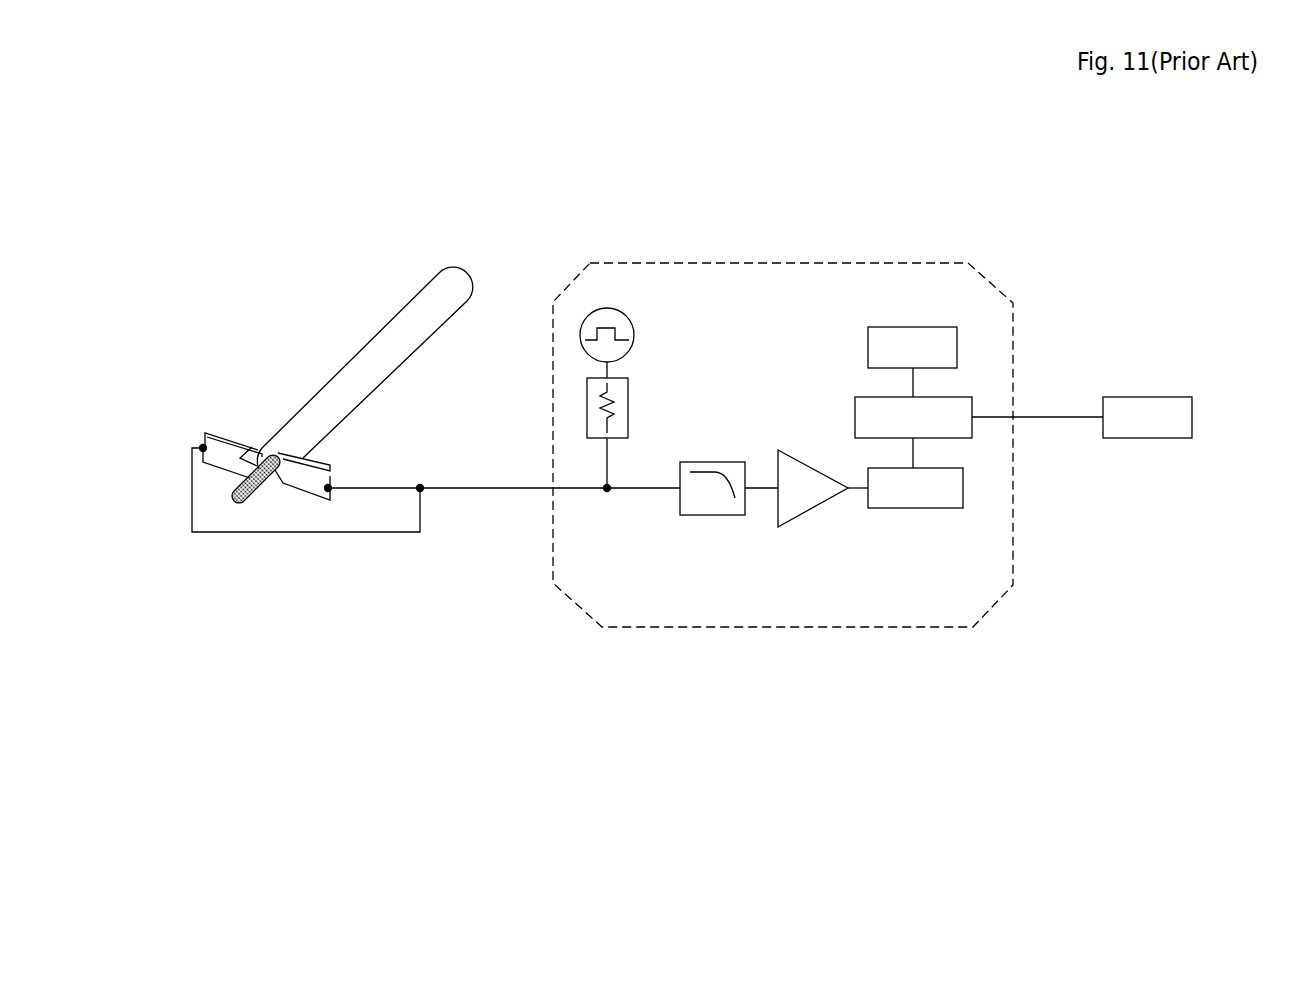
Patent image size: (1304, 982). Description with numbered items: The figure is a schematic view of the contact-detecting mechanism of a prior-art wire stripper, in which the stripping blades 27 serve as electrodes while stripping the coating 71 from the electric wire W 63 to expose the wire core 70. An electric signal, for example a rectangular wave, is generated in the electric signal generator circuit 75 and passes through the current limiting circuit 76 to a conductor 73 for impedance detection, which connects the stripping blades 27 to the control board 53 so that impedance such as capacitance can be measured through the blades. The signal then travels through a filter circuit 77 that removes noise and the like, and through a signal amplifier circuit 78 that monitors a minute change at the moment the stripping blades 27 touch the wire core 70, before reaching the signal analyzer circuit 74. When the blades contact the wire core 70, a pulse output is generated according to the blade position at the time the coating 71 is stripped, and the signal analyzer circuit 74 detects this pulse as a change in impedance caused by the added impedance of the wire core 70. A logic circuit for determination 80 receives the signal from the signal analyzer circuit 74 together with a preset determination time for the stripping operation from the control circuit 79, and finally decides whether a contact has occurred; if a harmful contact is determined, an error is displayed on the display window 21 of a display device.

The display window 21 is at (1123, 395).
The stripping blades 27 is at (212, 430).
The control board 53 is at (837, 259).
The electric wire W 63 is at (366, 355).
The wire core 70 is at (268, 498).
The coating 71 is at (368, 383).
The conductor 73 is at (482, 492).
The signal analyzer circuit 74 is at (963, 498).
The electric signal generator circuit 75 is at (617, 308).
The current limiting circuit 76 is at (587, 440).
The filter circuit 77 is at (681, 502).
The signal amplifier circuit 78 is at (815, 512).
The control circuit 79 is at (923, 325).
The logic circuit for determination 80 is at (972, 395).